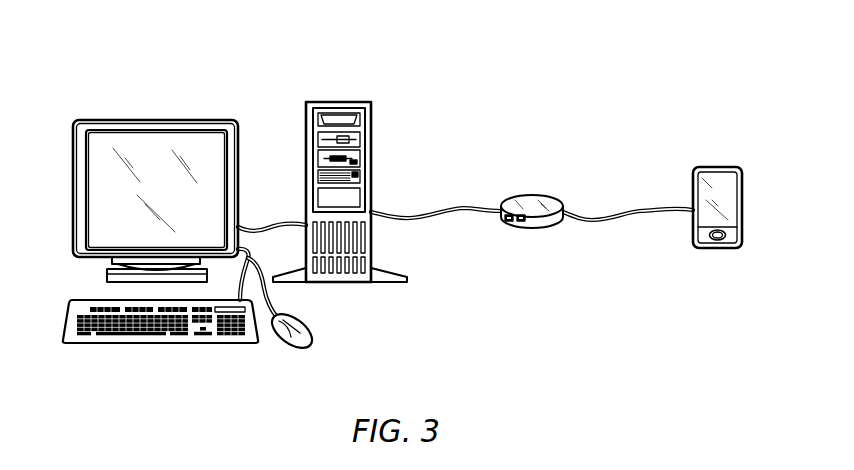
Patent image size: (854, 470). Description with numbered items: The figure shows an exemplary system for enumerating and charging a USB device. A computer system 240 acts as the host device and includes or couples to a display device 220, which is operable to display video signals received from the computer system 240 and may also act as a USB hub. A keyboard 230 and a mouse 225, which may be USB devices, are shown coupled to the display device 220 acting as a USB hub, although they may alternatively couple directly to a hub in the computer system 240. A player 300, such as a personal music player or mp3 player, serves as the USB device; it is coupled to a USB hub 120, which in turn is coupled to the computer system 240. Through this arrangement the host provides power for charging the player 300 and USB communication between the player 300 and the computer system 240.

The display device 220 is at (140, 118).
The computer system 240 is at (345, 101).
The USB hub 120 is at (534, 194).
The player 300 is at (717, 166).
The keyboard 230 is at (150, 345).
The mouse 225 is at (303, 348).